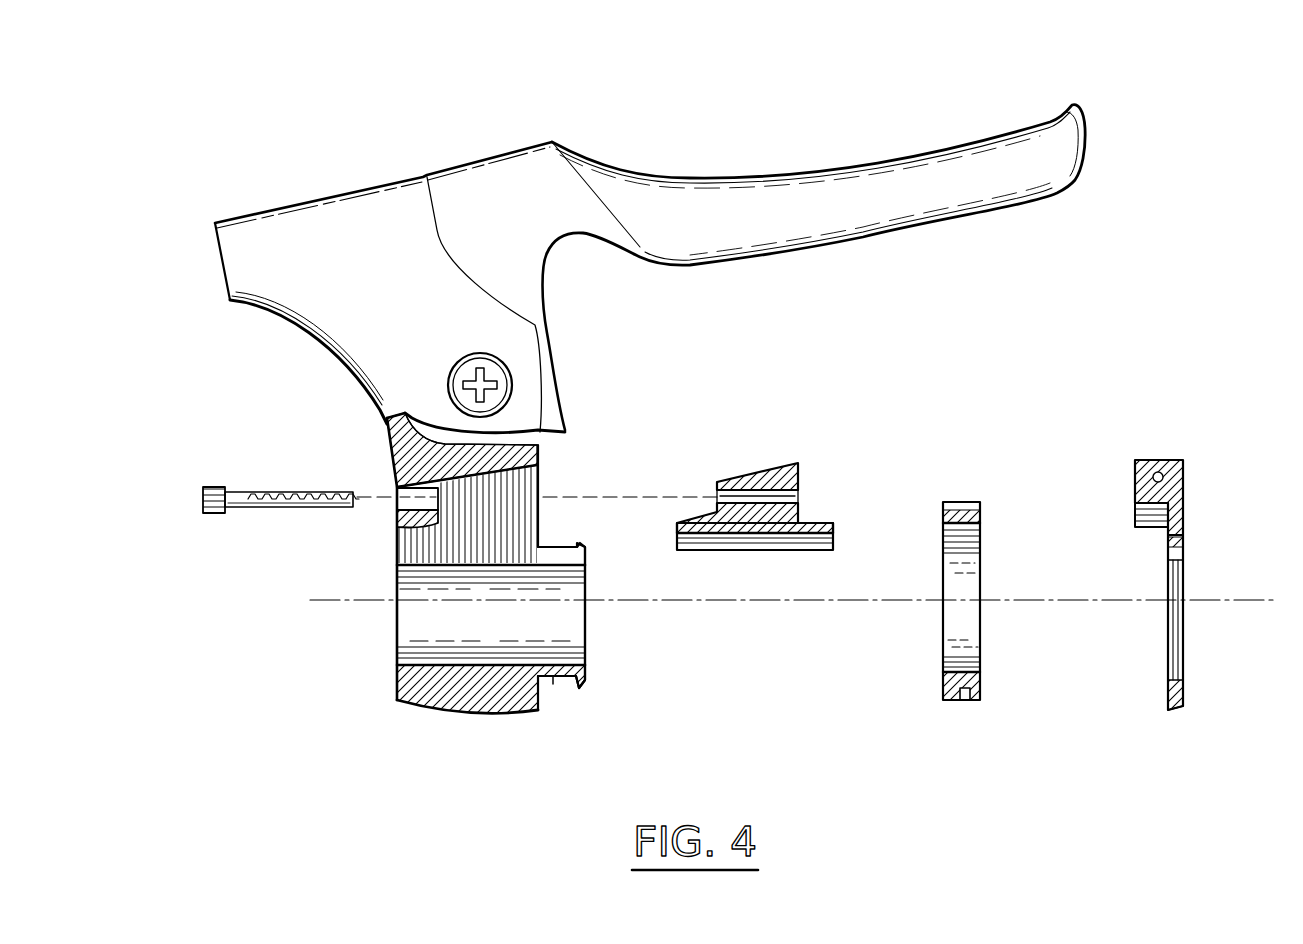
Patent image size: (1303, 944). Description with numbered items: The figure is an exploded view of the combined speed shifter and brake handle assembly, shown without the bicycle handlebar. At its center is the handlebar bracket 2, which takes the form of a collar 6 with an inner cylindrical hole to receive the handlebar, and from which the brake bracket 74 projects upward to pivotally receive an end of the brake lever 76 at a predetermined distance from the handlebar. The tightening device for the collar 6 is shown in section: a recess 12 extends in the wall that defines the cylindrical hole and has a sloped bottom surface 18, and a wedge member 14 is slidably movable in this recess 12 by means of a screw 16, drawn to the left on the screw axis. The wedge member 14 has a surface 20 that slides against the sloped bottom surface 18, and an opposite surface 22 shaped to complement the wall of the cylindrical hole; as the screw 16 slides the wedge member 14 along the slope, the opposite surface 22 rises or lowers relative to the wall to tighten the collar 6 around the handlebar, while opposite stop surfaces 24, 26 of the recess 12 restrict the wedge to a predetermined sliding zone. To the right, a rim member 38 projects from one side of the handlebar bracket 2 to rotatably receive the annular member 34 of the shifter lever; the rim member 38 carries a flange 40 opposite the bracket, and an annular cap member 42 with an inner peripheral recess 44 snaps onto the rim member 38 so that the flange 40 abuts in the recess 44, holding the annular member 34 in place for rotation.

The handlebar bracket 2 is at (476, 593).
The collar 6 is at (475, 693).
The recess 12 is at (478, 547).
The wedge member 14 is at (725, 538).
The screw 16 is at (225, 485).
The sloped bottom surface 18 is at (510, 490).
The surface 20 is at (745, 472).
The opposite surface 22 is at (812, 550).
The stop surface 24 is at (437, 517).
The stop surface 26 is at (1158, 555).
The annular member 34 is at (980, 517).
The rim member 38 is at (557, 678).
The flange 40 is at (582, 684).
The annular cap member 42 is at (1185, 480).
The inner peripheral recess 44 is at (1185, 673).
The brake bracket 74 is at (296, 203).
The brake lever 76 is at (653, 177).